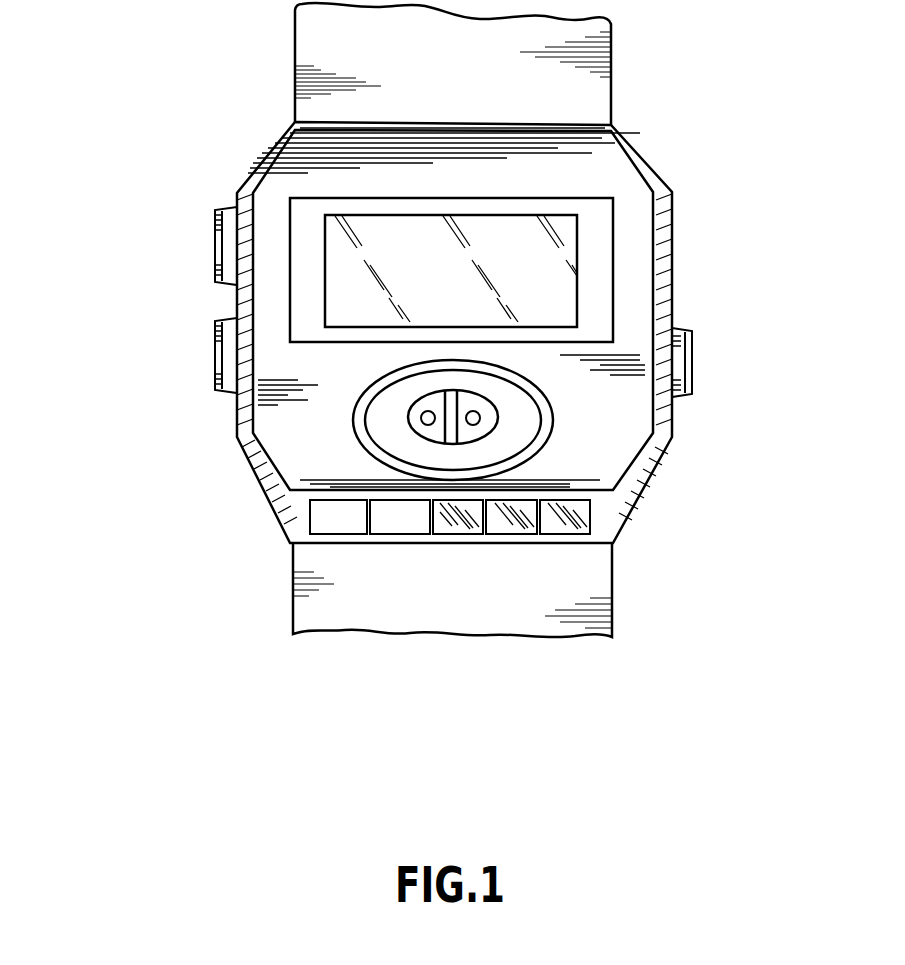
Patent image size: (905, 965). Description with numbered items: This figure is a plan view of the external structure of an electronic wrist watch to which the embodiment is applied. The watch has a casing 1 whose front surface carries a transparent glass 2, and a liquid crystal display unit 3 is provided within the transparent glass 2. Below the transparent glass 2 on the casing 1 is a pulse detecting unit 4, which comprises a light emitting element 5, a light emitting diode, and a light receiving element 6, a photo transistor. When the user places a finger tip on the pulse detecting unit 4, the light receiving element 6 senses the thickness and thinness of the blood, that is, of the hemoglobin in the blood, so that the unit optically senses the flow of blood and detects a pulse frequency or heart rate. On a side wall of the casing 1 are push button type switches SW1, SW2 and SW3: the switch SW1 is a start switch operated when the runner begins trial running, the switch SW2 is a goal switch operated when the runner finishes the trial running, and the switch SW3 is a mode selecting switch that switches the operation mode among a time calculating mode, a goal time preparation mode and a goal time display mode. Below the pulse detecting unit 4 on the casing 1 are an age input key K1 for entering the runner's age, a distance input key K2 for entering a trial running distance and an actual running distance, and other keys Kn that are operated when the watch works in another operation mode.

The casing 1 is at (600, 160).
The transparent glass 2 is at (603, 218).
The liquid crystal display unit 3 is at (563, 298).
The pulse detecting unit 4 is at (520, 410).
The light emitting element 5 is at (480, 418).
The light receiving element 6 is at (421, 420).
The start switch SW1 is at (215, 223).
The goal switch SW2 is at (220, 362).
The mode selecting switch SW3 is at (693, 360).
The age input key K1 is at (332, 537).
The distance input key K2 is at (397, 537).
The other keys Kn is at (433, 544).